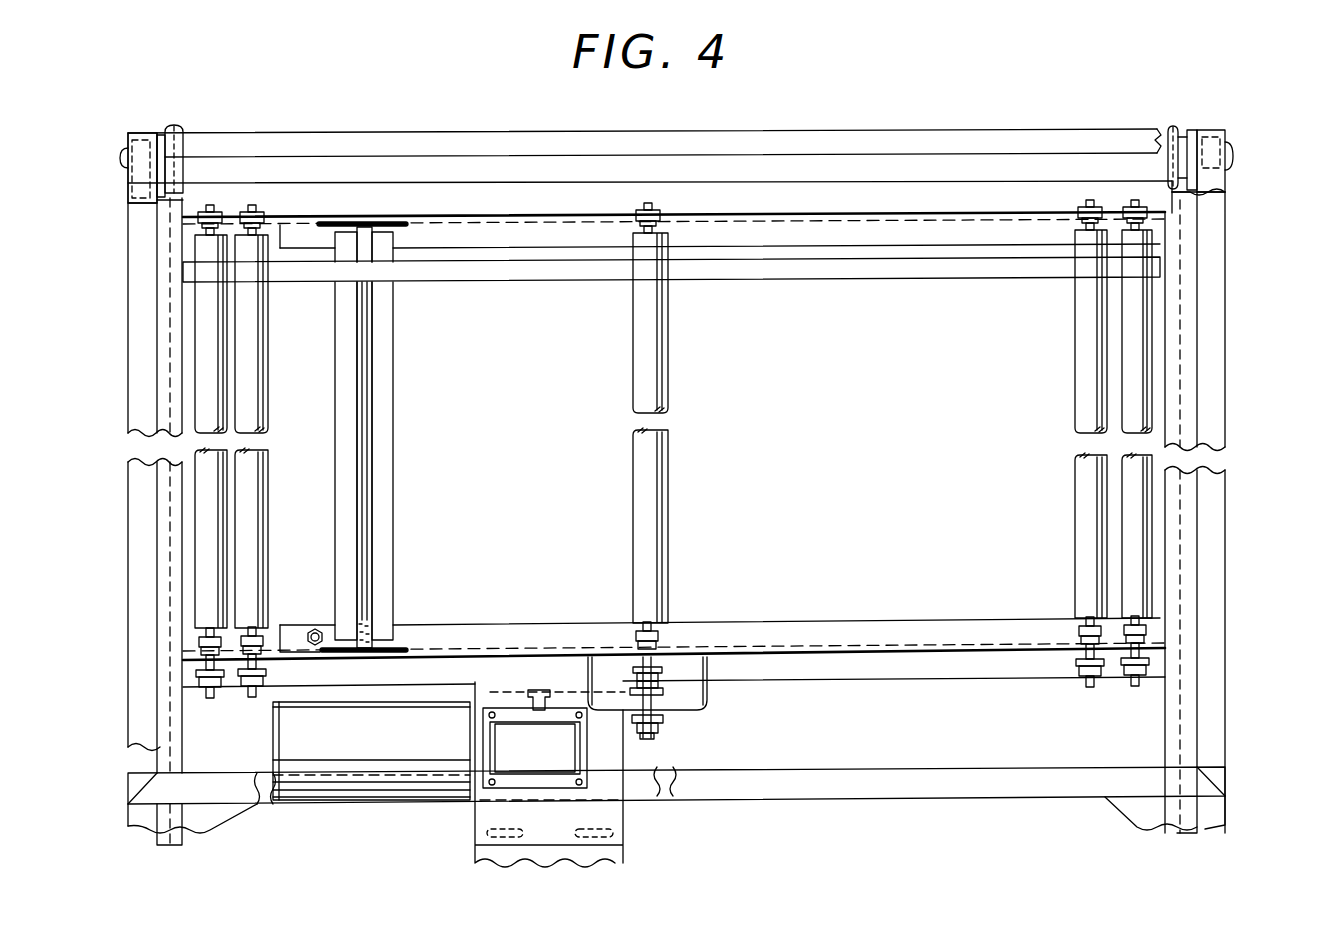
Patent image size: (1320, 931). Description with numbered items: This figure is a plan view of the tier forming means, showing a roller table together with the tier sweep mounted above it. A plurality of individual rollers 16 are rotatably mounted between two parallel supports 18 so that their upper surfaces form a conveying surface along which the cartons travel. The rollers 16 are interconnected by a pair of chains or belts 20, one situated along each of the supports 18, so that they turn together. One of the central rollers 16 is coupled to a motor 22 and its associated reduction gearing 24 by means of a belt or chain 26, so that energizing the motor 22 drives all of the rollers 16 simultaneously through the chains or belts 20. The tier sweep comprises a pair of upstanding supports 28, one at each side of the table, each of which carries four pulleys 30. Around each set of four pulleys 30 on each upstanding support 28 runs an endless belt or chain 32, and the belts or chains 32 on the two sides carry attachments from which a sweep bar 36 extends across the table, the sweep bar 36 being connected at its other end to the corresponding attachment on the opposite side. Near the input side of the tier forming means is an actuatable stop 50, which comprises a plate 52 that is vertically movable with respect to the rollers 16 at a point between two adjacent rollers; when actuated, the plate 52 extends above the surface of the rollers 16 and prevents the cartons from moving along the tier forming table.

The rollers 16 is at (248, 371).
The parallel supports 18 is at (785, 216).
The chains or belts 20 is at (920, 222).
The motor 22 is at (395, 750).
The reduction gearing 24 is at (553, 758).
The belt or chain 26 is at (625, 692).
The upstanding supports 28 is at (1210, 270).
The pulleys 30 is at (181, 188).
The endless belt or chain 32 is at (177, 198).
The sweep bar 36 is at (838, 272).
The actuatable stop 50 is at (362, 522).
The plate 52 is at (378, 468).